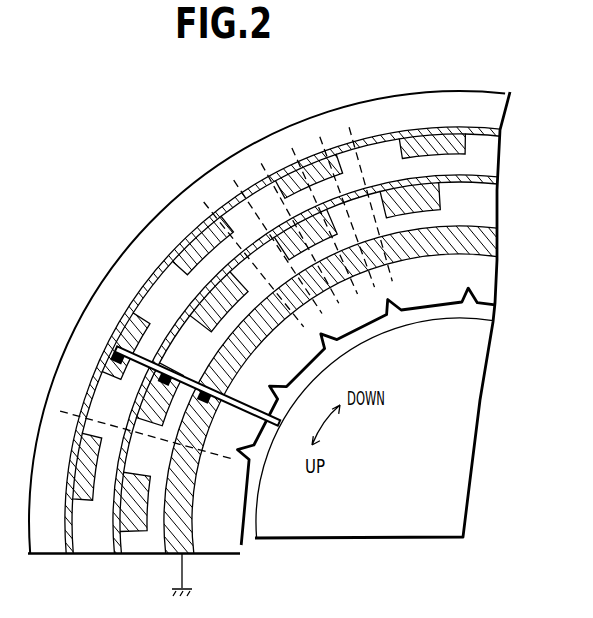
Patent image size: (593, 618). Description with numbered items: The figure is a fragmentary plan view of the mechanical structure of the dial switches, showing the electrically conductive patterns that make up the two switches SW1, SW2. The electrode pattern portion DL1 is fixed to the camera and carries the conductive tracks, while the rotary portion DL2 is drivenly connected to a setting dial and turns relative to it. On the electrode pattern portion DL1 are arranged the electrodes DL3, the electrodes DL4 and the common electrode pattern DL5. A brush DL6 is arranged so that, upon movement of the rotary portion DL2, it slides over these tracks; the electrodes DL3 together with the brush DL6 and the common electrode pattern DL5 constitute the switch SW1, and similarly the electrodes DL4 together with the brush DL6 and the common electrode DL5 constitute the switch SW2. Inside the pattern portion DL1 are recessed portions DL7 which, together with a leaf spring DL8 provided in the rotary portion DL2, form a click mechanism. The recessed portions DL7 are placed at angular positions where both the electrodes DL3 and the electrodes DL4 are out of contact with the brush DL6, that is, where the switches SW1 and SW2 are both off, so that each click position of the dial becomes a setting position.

The electrode pattern portion DL1 is at (55, 543).
The rotary portion DL2 is at (478, 384).
The electrodes DL3 is at (414, 131).
The electrodes DL4 is at (437, 197).
The common electrode pattern DL5 is at (472, 255).
The brush DL6 is at (198, 402).
The recessed portions DL7 is at (392, 300).
The leaf spring DL8 is at (334, 358).
The switch SW1 is at (503, 131).
The switch SW2 is at (495, 177).